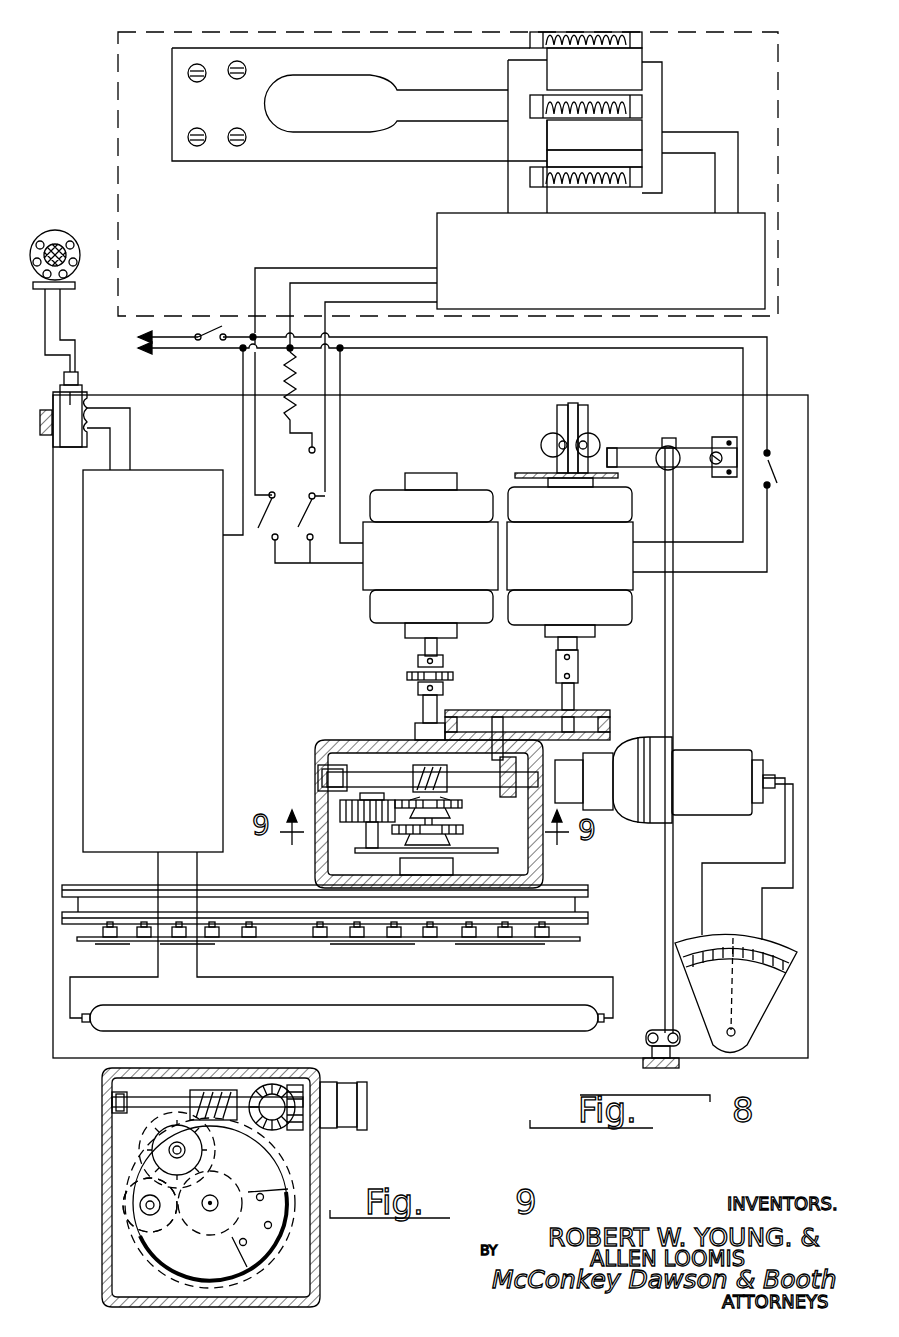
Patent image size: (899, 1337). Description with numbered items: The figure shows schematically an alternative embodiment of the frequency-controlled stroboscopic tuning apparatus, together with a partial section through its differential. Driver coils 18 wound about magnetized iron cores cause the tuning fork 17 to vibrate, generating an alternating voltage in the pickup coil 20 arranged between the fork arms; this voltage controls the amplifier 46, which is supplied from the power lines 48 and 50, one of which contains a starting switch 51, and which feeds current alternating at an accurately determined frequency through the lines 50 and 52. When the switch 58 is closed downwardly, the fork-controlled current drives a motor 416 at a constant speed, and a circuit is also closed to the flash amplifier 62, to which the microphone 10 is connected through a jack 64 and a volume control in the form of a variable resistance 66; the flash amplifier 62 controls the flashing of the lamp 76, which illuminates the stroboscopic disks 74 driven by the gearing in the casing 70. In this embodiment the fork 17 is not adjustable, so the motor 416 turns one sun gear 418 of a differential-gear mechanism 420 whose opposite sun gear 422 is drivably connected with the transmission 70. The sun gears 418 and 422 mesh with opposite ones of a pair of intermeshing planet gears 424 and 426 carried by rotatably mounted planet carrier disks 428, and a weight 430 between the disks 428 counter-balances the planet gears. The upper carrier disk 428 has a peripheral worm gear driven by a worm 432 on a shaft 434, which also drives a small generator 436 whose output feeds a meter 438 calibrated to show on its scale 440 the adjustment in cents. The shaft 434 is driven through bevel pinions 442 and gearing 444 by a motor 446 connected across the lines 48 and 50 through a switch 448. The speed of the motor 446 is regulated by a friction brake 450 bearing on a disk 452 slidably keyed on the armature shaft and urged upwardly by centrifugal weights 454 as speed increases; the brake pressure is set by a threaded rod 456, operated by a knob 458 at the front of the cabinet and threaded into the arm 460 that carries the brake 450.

In FIG. 8, the microphone 10 is at (52, 232).
In FIG. 8, the tuning fork 17 is at (258, 164).
In FIG. 8, the driver coils 18 is at (556, 50).
In FIG. 8, the pickup coil 20 is at (615, 111).
In FIG. 8, the amplifier 46 is at (458, 225).
In FIG. 8, the power line 48 is at (172, 337).
In FIG. 8, the power line 50 is at (172, 354).
In FIG. 8, the starting switch 51 is at (205, 320).
In FIG. 8, the line 52 is at (400, 302).
In FIG. 8, the switch 58 is at (308, 468).
In FIG. 8, the flash amplifier 62 is at (212, 692).
In FIG. 8, the jack 64 is at (80, 392).
In FIG. 8, the variable resistance 66 is at (52, 432).
In FIG. 8, the transmission casing 70 is at (213, 898).
In FIG. 8, the stroboscopic disks 74 is at (77, 941).
In FIG. 8, the lamp 76 is at (370, 1020).
In FIG. 8, the motor 416 is at (390, 508).
In FIG. 8, the sun gear 418 is at (455, 805).
In FIG. 9, the sun gear 418 is at (223, 1188).
In FIG. 8, the differential-gear mechanism 420 is at (345, 745).
In FIG. 9, the differential-gear mechanism 420 is at (127, 1128).
In FIG. 8, the sun gear 422 is at (458, 832).
In FIG. 8, the planet gear 424 is at (343, 808).
In FIG. 9, the planet gear 424 is at (162, 1123).
In FIG. 8, the planet gear 426 is at (380, 830).
In FIG. 9, the planet gear 426 is at (127, 1204).
In FIG. 8, the planet carrier disks 428 is at (383, 768).
In FIG. 9, the planet carrier disks 428 is at (167, 1254).
In FIG. 9, the weight 430 is at (272, 1253).
In FIG. 8, the worm 432 is at (428, 768).
In FIG. 9, the worm 432 is at (218, 1072).
In FIG. 8, the shaft 434 is at (335, 770).
In FIG. 9, the shaft 434 is at (150, 1073).
In FIG. 8, the generator 436 is at (692, 768).
In FIG. 9, the generator 436 is at (368, 1105).
In FIG. 8, the meter 438 is at (750, 1015).
In FIG. 8, the scale 440 is at (752, 942).
In FIG. 8, the bevel pinions 442 is at (515, 765).
In FIG. 9, the bevel pinions 442 is at (323, 1081).
In FIG. 8, the gearing 444 is at (513, 726).
In FIG. 8, the motor 446 is at (603, 612).
In FIG. 8, the switch 448 is at (773, 463).
In FIG. 8, the friction brake 450 is at (613, 462).
In FIG. 8, the disk 452 is at (520, 472).
In FIG. 8, the centrifugal weights 454 is at (552, 432).
In FIG. 8, the threaded rod 456 is at (670, 690).
In FIG. 8, the knob 458 is at (640, 1073).
In FIG. 8, the arm 460 is at (688, 458).